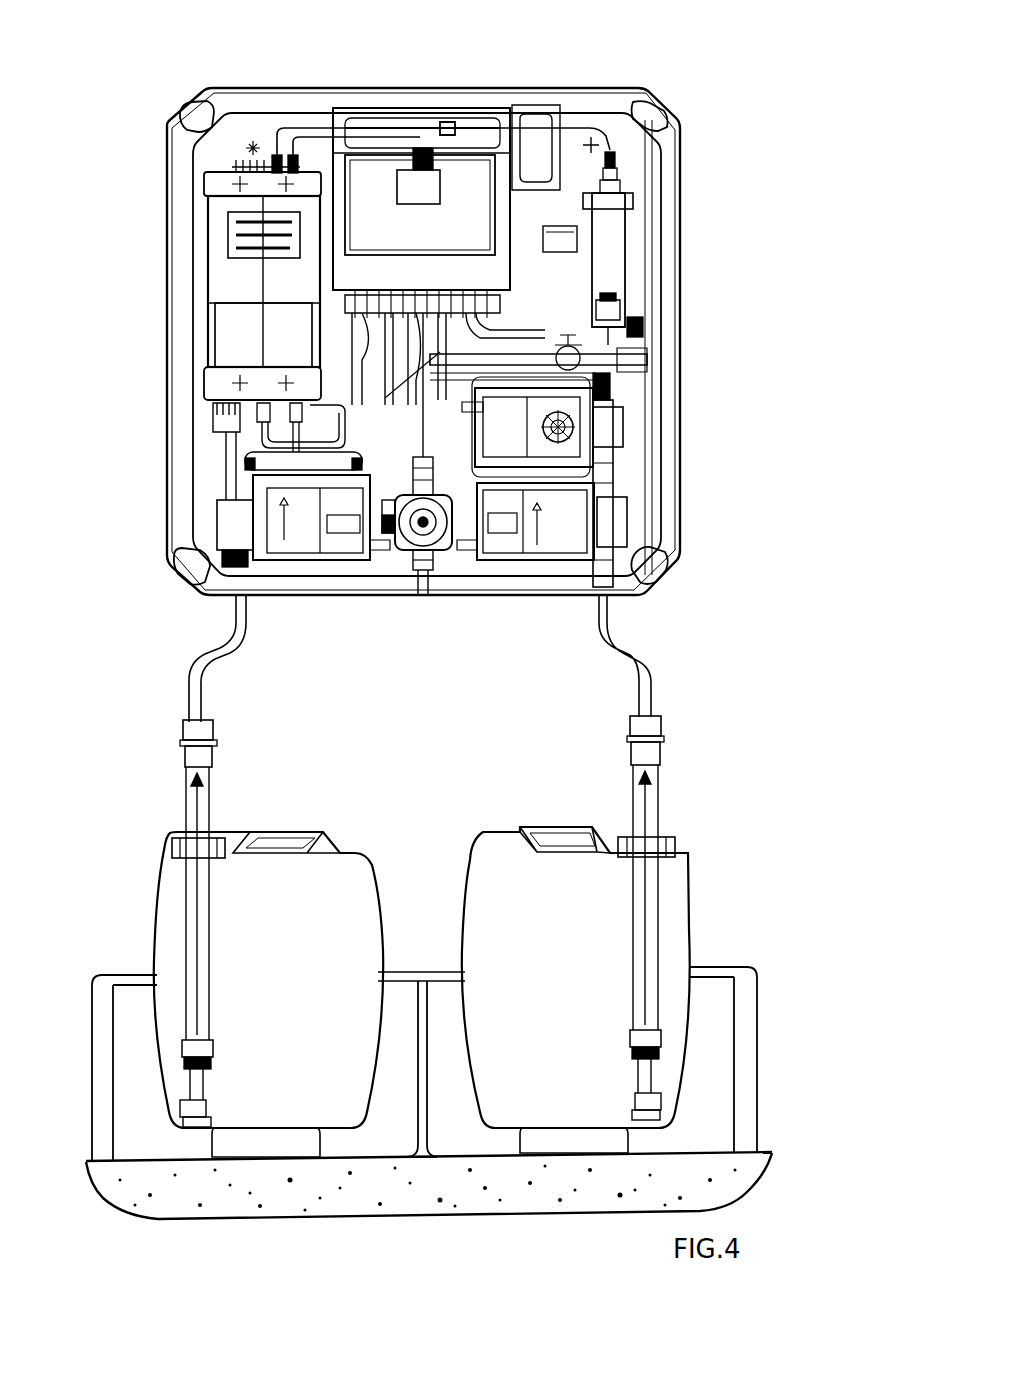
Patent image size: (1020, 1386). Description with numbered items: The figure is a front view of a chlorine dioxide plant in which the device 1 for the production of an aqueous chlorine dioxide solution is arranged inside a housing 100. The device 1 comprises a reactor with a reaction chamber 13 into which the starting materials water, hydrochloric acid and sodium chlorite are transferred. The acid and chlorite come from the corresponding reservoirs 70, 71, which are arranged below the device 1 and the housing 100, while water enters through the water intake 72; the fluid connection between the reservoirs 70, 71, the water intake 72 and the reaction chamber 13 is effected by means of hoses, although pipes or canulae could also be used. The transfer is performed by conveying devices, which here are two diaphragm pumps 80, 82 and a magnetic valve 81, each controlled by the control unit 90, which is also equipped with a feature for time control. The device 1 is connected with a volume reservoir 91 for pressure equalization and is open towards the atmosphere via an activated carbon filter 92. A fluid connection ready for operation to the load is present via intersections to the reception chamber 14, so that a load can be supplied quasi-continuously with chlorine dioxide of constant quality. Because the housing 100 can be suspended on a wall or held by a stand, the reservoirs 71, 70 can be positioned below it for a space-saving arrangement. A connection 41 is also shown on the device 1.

The device 1 is at (357, 208).
The reaction chamber 13 is at (208, 200).
The reception chamber 14 is at (225, 340).
The feed line connection 41 is at (262, 165).
The reservoir 70 is at (510, 878).
The reservoir 71 is at (337, 878).
The water intake 72 is at (425, 575).
The diaphragm pump 80 is at (280, 547).
The magnetic valve 81 is at (440, 545).
The diaphragm pump 82 is at (563, 520).
The control unit 90 is at (374, 205).
The volume reservoir 91 is at (463, 122).
The activated carbon filter 92 is at (610, 242).
The housing 100 is at (697, 341).